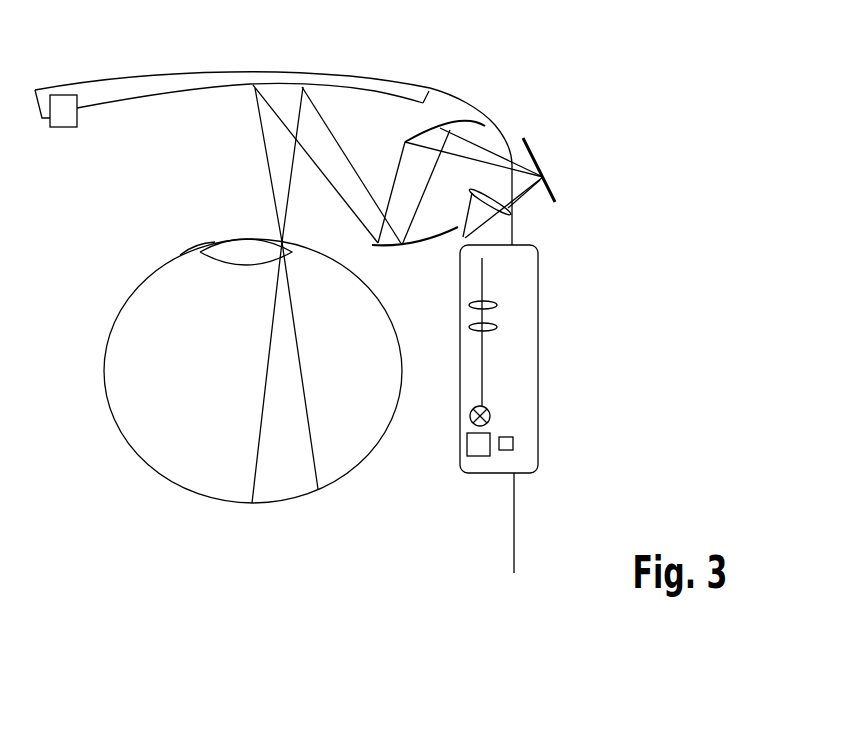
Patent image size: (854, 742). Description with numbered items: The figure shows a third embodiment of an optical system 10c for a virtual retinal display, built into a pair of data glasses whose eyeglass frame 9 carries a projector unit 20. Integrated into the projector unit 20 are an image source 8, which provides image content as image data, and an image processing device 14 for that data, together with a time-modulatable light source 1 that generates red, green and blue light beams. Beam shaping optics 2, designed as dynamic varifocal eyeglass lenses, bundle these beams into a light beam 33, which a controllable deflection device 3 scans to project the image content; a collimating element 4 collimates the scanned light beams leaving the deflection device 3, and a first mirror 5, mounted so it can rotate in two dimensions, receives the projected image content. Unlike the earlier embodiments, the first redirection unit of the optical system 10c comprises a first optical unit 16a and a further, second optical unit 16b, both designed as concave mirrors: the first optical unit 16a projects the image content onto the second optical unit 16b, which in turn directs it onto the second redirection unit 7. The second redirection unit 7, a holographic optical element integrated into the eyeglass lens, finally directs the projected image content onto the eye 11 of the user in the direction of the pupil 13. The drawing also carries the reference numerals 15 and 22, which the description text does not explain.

The light source 1 is at (490, 418).
The beam shaping optics 2 is at (497, 303).
The controllable deflection device 3 is at (487, 258).
The collimating element 4 is at (512, 225).
The first mirror 5 is at (537, 158).
The second redirection unit 7 is at (366, 86).
The image source 8 is at (483, 448).
The eyeglass frame 9 is at (516, 505).
The optical system 10c is at (643, 203).
The eye 11 is at (128, 362).
The pupil 13 is at (200, 249).
The image processing device 14 is at (512, 445).
The sensor element 15 is at (68, 107).
The first optical unit 16a is at (478, 112).
The second optical unit 16b is at (422, 248).
The projector unit 20 is at (540, 272).
The cornea 22 is at (200, 253).
The light beam 33 is at (482, 360).